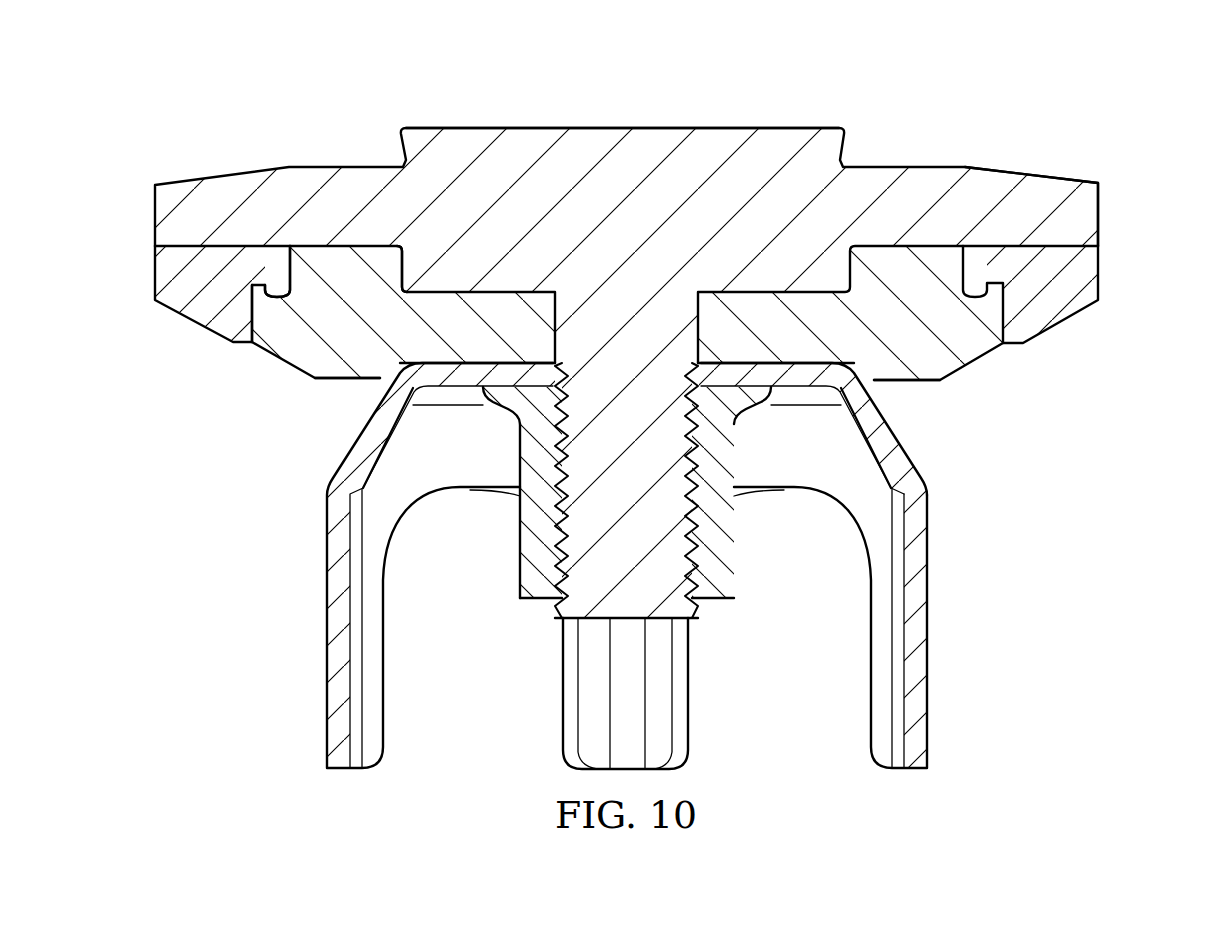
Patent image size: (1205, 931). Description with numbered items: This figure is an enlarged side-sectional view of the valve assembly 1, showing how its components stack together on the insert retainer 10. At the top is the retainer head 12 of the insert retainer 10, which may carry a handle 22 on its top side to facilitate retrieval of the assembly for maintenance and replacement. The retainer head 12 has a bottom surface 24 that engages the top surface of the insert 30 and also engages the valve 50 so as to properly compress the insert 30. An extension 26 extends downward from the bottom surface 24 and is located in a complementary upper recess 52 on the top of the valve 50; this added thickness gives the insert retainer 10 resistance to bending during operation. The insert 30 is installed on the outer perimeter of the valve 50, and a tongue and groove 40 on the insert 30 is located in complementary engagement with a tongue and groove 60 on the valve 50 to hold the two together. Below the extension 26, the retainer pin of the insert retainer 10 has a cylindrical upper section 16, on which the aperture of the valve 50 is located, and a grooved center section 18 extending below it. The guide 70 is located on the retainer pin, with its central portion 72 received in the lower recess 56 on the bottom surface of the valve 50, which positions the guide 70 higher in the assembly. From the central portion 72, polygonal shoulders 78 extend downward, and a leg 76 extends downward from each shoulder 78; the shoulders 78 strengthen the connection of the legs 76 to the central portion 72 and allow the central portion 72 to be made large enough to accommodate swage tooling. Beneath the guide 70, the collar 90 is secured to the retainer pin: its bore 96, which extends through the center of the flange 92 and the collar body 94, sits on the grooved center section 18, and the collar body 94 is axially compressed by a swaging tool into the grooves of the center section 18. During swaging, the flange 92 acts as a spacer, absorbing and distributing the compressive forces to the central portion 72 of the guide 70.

The valve assembly 1 is at (190, 85).
The insert retainer 10 is at (373, 166).
The retainer head 12 is at (1100, 212).
The cylindrical upper section 16 is at (699, 341).
The grooved center section 18 is at (700, 616).
The handle 22 is at (665, 127).
The bottom surface 24 is at (814, 293).
The extension 26 is at (455, 363).
The insert 30 is at (156, 290).
The tongue and groove 40 is at (269, 273).
The valve 50 is at (326, 379).
The upper recess 52 is at (421, 318).
The lower recess 56 is at (880, 384).
The tongue and groove 60 is at (270, 318).
The guide 70 is at (326, 602).
The central portion 72 is at (793, 393).
The leg 76 is at (928, 634).
The shoulder 78 is at (900, 432).
The collar 90 is at (546, 598).
The flange 92 is at (483, 399).
The collar body 94 is at (520, 561).
The bore 96 is at (688, 548).